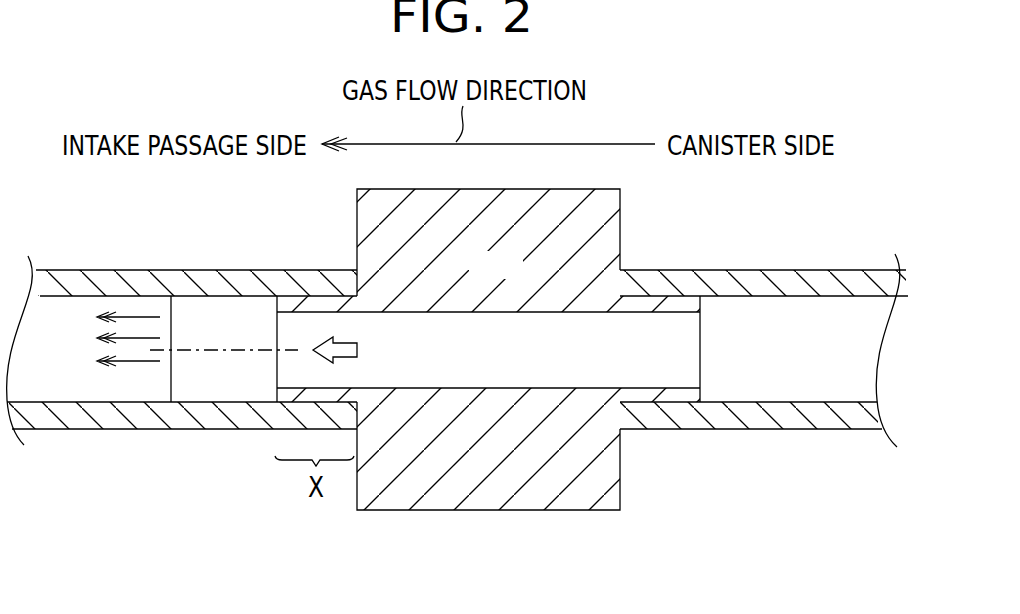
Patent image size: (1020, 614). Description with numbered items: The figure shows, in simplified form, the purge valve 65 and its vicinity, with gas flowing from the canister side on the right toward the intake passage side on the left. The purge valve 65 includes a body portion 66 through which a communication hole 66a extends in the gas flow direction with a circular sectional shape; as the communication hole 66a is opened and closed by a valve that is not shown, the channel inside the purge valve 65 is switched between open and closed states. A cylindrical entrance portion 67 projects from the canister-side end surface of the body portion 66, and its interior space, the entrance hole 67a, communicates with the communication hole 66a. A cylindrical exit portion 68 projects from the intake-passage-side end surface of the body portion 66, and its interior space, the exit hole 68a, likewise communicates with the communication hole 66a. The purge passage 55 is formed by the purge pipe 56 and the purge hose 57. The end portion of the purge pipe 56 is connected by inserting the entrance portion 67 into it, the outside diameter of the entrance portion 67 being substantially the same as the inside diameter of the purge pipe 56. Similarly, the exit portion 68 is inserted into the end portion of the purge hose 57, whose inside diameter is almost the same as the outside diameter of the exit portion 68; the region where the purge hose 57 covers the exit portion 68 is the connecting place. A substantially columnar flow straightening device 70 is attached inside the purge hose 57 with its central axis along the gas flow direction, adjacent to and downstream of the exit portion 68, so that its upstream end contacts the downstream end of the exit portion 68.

The purge passage 55 is at (457, 360).
The purge pipe 56 is at (717, 430).
The purge hose 57 is at (182, 360).
The purge valve 65 is at (551, 348).
The body portion 66 is at (621, 198).
The communication hole 66a is at (495, 318).
The entrance portion 67 is at (663, 296).
The entrance hole 67a is at (672, 312).
The exit portion 68 is at (303, 296).
The exit hole 68a is at (335, 317).
The flow straightening device 70 is at (221, 294).